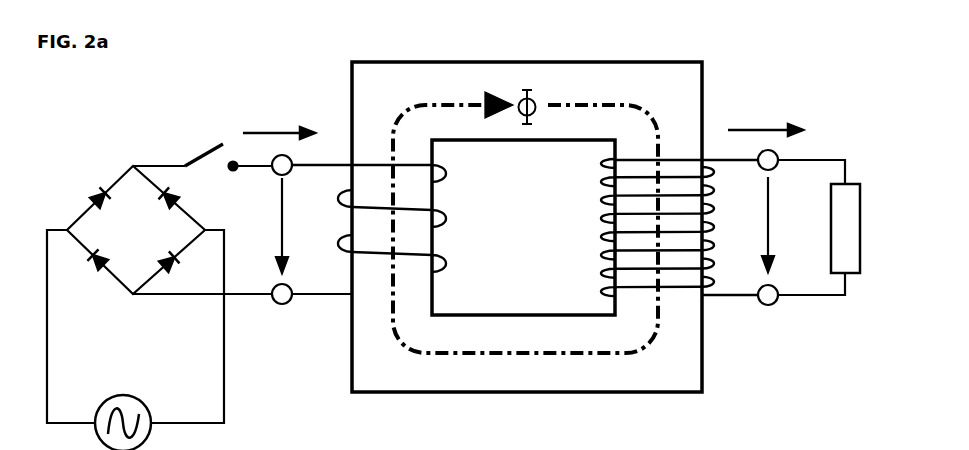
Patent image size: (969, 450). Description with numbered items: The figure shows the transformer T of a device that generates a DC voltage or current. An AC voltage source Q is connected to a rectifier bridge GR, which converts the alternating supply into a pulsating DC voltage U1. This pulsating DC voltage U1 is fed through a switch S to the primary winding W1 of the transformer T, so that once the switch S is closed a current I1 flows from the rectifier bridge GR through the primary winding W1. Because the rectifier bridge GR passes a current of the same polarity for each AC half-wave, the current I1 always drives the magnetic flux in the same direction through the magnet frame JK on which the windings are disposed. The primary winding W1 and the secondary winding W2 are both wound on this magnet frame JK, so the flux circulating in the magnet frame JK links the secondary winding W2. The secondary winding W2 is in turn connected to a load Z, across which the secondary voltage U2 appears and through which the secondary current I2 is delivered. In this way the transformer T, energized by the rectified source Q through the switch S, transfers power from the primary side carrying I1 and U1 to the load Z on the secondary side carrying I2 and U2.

The rectifier bridge GR is at (103, 170).
The switch S is at (228, 140).
The AC voltage source Q is at (131, 413).
The transformer T is at (535, 216).
The magnet frame JK is at (680, 363).
The primary winding W1 is at (395, 218).
The secondary winding W2 is at (656, 227).
The load Z is at (849, 334).
The current I1 is at (290, 123).
The pulsating DC voltage U1 is at (317, 232).
The secondary current I2 is at (770, 120).
The secondary voltage U2 is at (803, 230).